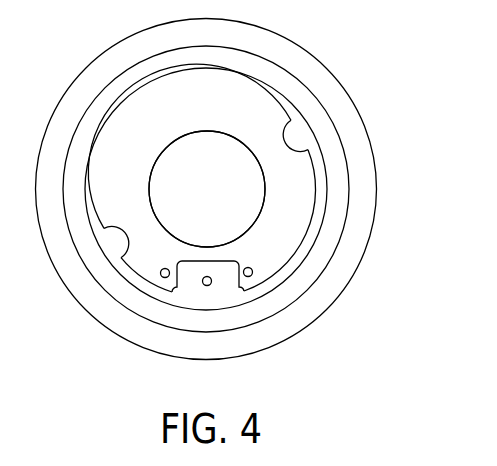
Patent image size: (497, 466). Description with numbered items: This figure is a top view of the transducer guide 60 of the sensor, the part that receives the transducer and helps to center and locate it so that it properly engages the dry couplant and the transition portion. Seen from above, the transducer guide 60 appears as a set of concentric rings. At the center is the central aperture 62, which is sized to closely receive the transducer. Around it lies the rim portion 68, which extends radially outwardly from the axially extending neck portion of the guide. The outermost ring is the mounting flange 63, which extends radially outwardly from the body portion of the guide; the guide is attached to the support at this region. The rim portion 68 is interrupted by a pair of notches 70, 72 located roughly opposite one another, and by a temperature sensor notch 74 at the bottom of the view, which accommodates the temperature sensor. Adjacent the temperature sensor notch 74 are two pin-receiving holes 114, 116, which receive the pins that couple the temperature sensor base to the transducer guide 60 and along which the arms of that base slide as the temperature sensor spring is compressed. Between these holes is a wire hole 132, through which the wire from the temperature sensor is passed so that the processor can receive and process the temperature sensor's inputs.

The transducer guide 60 is at (360, 243).
The mounting flange 63 is at (360, 163).
The central aperture 62 is at (185, 162).
The rim portion 68 is at (208, 108).
The notch 70 is at (287, 142).
The notch 72 is at (108, 255).
The temperature sensor notch 74 is at (228, 262).
The pin-receiving hole 114 is at (165, 278).
The pin-receiving hole 116 is at (250, 278).
The wire hole 132 is at (205, 287).